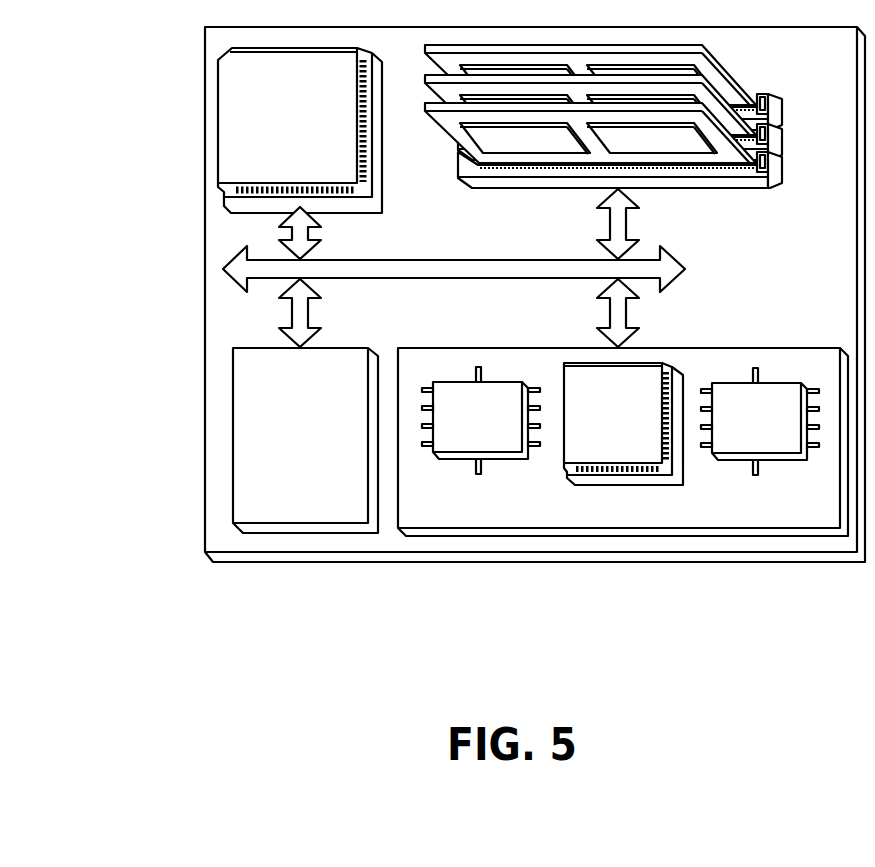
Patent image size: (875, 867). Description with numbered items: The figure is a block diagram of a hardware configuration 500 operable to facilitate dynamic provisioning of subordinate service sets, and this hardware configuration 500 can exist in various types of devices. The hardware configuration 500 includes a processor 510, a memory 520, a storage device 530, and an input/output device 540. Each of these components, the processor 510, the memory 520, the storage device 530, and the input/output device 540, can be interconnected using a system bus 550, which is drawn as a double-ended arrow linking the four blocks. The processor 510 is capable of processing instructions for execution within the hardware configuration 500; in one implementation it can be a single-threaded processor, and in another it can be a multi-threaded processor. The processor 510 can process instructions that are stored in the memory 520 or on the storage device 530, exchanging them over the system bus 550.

The hardware configuration 500 is at (164, 592).
The processor 510 is at (345, 176).
The memory 520 is at (762, 98).
The storage device 530 is at (358, 521).
The input/output device 540 is at (800, 348).
The system bus 550 is at (450, 279).